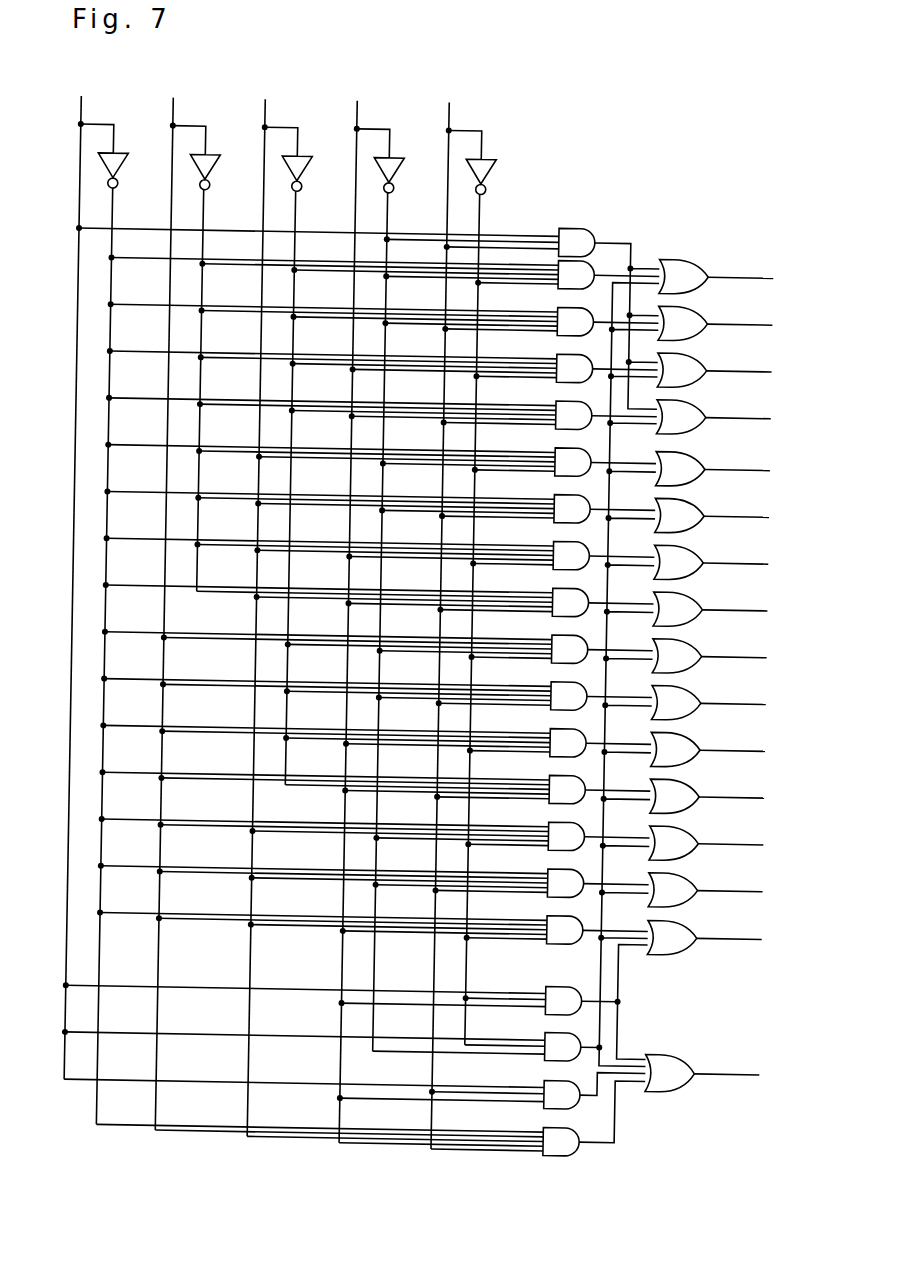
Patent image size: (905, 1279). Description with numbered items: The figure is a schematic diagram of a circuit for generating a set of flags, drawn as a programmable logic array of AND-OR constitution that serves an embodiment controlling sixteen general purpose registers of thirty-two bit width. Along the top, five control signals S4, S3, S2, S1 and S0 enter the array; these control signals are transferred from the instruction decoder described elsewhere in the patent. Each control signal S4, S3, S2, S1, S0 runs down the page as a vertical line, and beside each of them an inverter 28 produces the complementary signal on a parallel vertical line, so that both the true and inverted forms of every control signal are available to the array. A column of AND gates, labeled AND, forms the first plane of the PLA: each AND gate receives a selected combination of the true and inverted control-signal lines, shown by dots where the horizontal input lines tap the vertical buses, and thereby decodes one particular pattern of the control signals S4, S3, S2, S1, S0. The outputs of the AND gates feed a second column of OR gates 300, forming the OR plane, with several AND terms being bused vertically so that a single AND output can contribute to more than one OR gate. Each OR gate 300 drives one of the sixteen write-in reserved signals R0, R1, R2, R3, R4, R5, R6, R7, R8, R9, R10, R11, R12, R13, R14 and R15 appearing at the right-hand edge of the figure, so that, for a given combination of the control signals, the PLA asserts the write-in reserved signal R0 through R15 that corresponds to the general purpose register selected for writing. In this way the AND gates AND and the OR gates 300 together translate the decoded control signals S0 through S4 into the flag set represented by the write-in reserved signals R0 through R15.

The inverter 28 is at (497, 161).
The OR gate 300 is at (693, 246).
The AND gate AND is at (580, 218).
The control signal S4 is at (81, 575).
The control signal S3 is at (172, 601).
The control signal S2 is at (264, 605).
The control signal S1 is at (357, 609).
The control signal S0 is at (449, 612).
The write-in reserved signal R0 is at (761, 283).
The write-in reserved signal R1 is at (760, 330).
The write-in reserved signal R2 is at (759, 377).
The write-in reserved signal R3 is at (758, 424).
The write-in reserved signal R4 is at (758, 475).
The write-in reserved signal R5 is at (757, 522).
The write-in reserved signal R6 is at (756, 569).
The write-in reserved signal R7 is at (755, 616).
The write-in reserved signal R8 is at (754, 663).
The write-in reserved signal R9 is at (754, 709).
The write-in reserved signal R10 is at (762, 756).
The write-in reserved signal R11 is at (761, 803).
The write-in reserved signal R12 is at (760, 850).
The write-in reserved signal R13 is at (759, 897).
The write-in reserved signal R14 is at (758, 944).
The write-in reserved signal R15 is at (756, 1080).